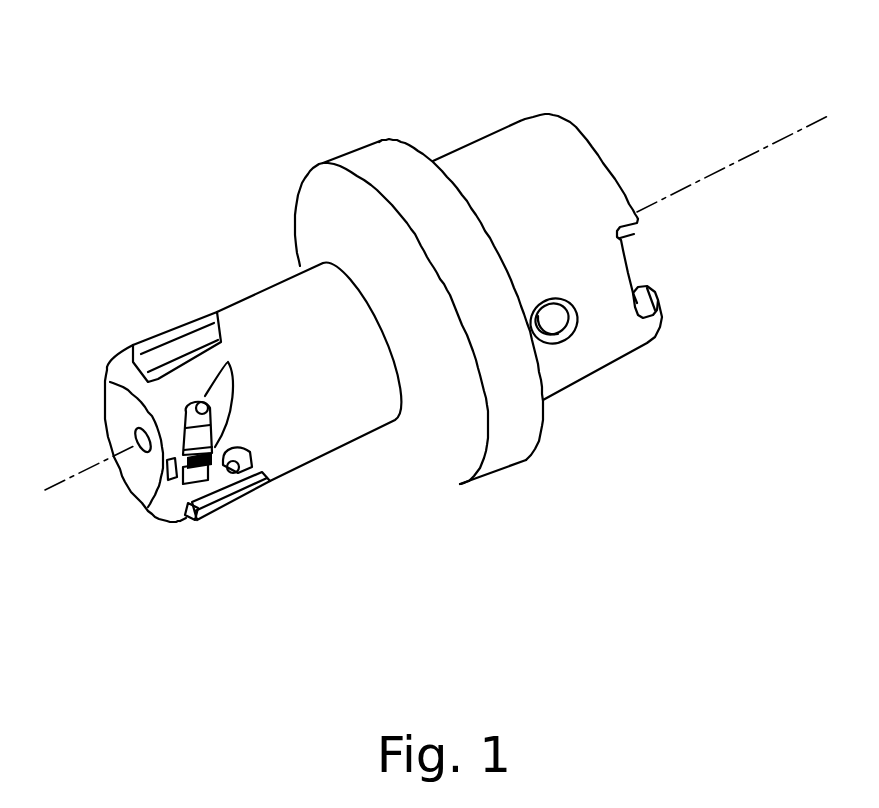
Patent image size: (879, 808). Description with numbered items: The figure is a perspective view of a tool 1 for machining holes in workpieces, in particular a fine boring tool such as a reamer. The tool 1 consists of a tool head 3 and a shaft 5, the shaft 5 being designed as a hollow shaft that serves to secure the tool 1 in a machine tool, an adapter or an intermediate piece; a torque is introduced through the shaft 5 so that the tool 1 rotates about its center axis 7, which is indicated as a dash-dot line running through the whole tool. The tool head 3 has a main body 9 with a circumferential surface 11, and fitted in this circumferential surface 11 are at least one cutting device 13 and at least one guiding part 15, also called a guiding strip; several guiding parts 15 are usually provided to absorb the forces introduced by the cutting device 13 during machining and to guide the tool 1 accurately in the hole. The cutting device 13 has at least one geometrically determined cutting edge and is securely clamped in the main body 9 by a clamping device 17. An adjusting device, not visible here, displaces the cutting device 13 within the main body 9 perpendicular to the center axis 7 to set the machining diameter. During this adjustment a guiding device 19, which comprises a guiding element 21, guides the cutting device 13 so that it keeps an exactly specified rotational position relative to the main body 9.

The tool 1 is at (425, 117).
The tool head 3 is at (187, 417).
The shaft 5 is at (548, 127).
The center axis 7 is at (759, 147).
The main body 9 is at (118, 412).
The circumferential surface 11 is at (235, 304).
The cutting device 13 is at (169, 478).
The guiding part 15 is at (135, 350).
The clamping device 17 is at (177, 441).
The guiding device 19 is at (229, 484).
The guiding element 21 is at (240, 468).